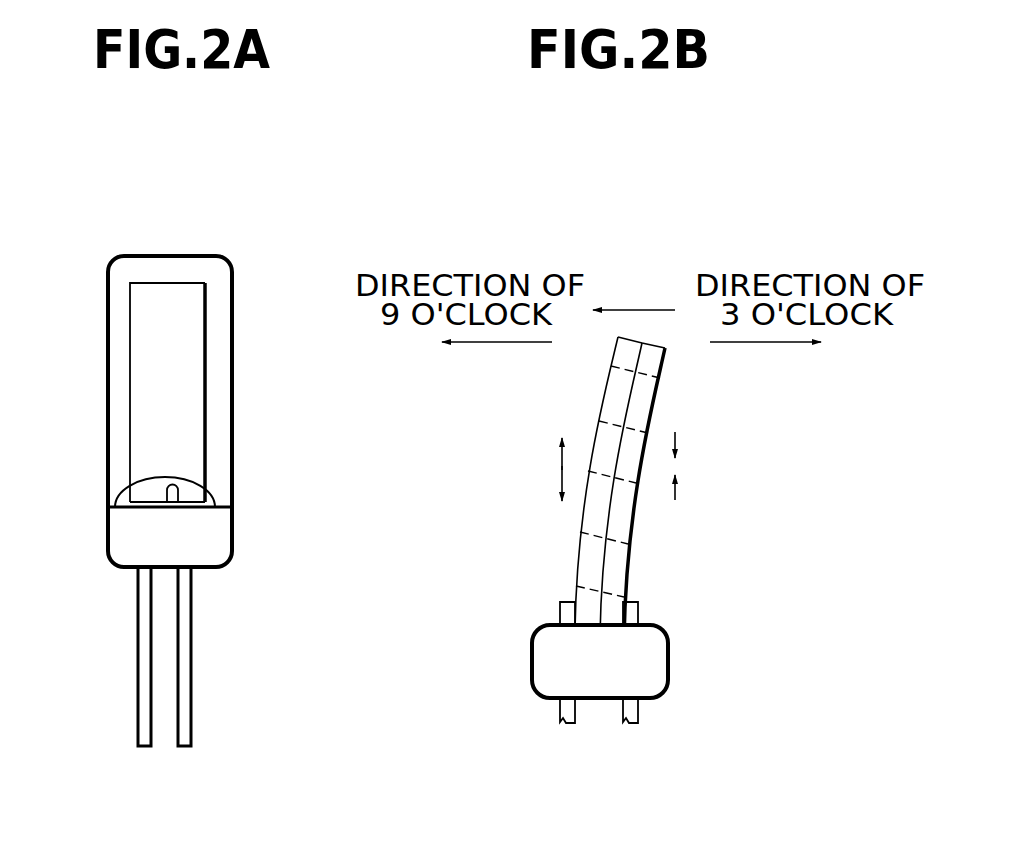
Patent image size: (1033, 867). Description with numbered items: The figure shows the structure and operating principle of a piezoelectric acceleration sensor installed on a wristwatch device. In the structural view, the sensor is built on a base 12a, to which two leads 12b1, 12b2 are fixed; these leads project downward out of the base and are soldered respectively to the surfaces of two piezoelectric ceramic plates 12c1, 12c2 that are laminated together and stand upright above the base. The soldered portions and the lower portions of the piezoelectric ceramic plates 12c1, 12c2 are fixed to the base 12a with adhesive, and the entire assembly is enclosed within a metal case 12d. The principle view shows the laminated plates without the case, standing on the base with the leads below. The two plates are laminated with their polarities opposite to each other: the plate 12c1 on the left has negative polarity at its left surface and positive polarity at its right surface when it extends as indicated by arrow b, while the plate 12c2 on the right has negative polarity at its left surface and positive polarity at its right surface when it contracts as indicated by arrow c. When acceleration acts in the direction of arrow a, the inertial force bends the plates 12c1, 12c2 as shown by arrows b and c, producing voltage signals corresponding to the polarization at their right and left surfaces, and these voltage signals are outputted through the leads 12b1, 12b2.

In FIG. 2A, the metal case 12d is at (233, 297).
In FIG. 2A, the piezoelectric ceramic plate 12c1 is at (193, 398).
In FIG. 2B, the piezoelectric ceramic plate 12c1 is at (582, 552).
In FIG. 2A, the piezoelectric ceramic plate 12c2 is at (307, 392).
In FIG. 2B, the piezoelectric ceramic plate 12c2 is at (625, 555).
In FIG. 2A, the base 12a is at (213, 540).
In FIG. 2A, the lead 12b1 is at (136, 641).
In FIG. 2A, the lead 12b2 is at (193, 643).
In FIG. 2B, the arrow a is at (638, 309).
In FIG. 2B, the arrow b is at (558, 468).
In FIG. 2B, the arrow c is at (677, 463).